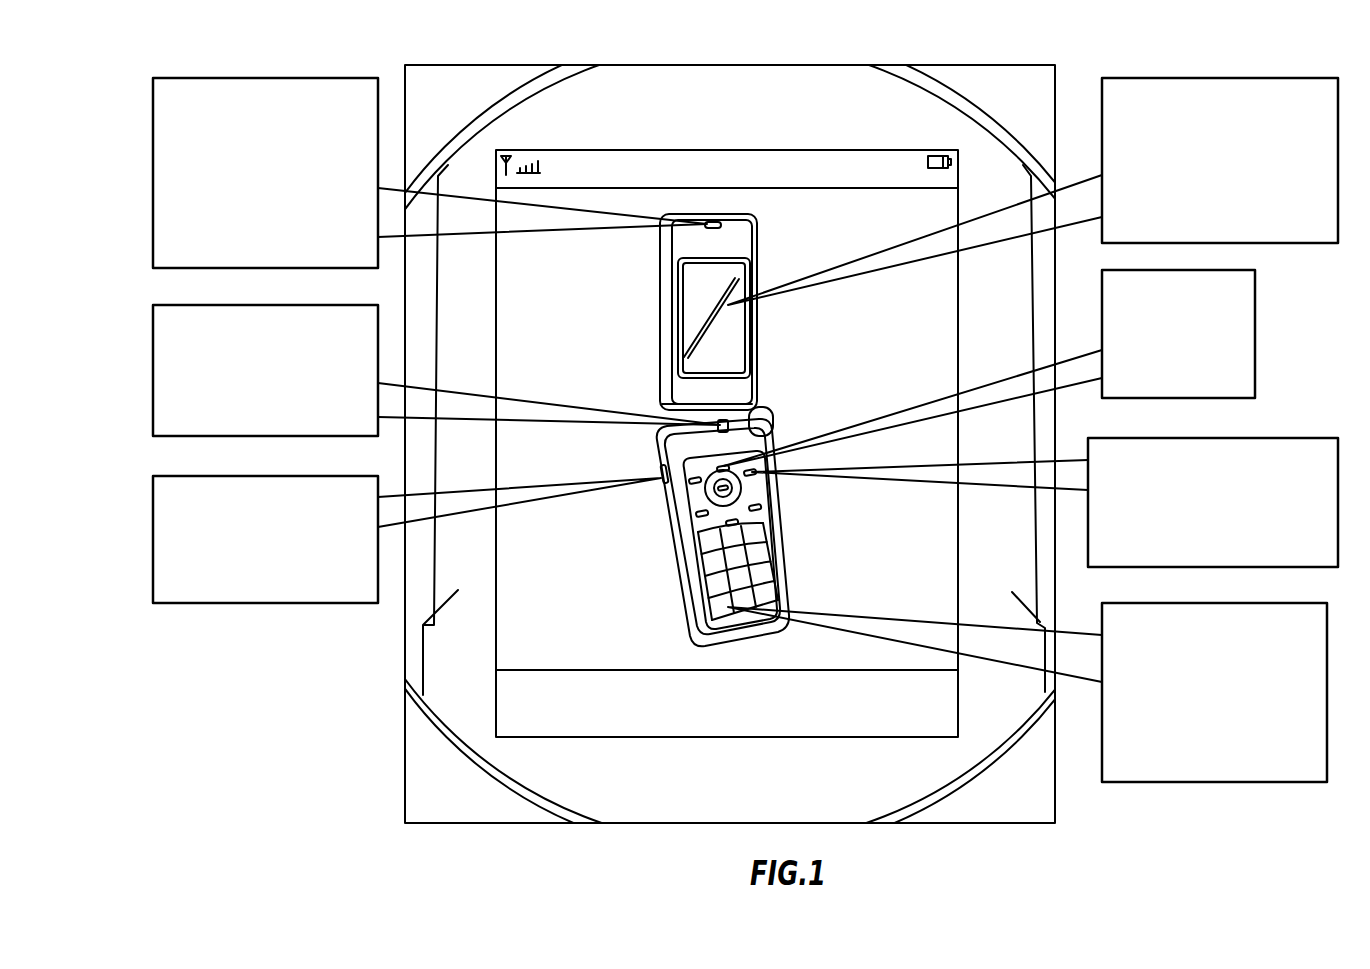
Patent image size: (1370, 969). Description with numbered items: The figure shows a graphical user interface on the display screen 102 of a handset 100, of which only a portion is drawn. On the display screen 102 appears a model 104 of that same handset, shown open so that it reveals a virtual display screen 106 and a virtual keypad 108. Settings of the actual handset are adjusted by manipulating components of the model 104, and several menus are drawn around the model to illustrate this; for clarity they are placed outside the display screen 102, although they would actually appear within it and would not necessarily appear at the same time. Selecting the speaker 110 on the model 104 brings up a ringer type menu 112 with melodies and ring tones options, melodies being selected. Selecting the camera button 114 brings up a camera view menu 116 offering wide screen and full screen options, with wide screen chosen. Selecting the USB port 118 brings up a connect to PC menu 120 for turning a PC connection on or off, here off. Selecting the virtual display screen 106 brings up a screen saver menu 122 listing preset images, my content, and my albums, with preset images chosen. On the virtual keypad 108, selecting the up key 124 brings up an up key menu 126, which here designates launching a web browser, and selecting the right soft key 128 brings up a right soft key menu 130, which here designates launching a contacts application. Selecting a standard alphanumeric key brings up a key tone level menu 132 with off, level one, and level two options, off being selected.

The handset 100 is at (405, 738).
The display screen 102 is at (520, 637).
The model of the handset 104 is at (682, 588).
The virtual display screen 106 is at (689, 282).
The virtual keypad 108 is at (760, 530).
The speaker 110 is at (719, 223).
The ringer type menu 112 is at (297, 75).
The camera button 114 is at (765, 412).
The camera view menu 116 is at (253, 303).
The USB port 118 is at (661, 486).
The connect to PC menu 120 is at (268, 606).
The screen saver menu 122 is at (1295, 77).
The up key 124 is at (724, 467).
The up key menu 126 is at (1255, 320).
The right soft key 128 is at (765, 502).
The right soft key menu 130 is at (1285, 437).
The key tone level menu 132 is at (1292, 782).